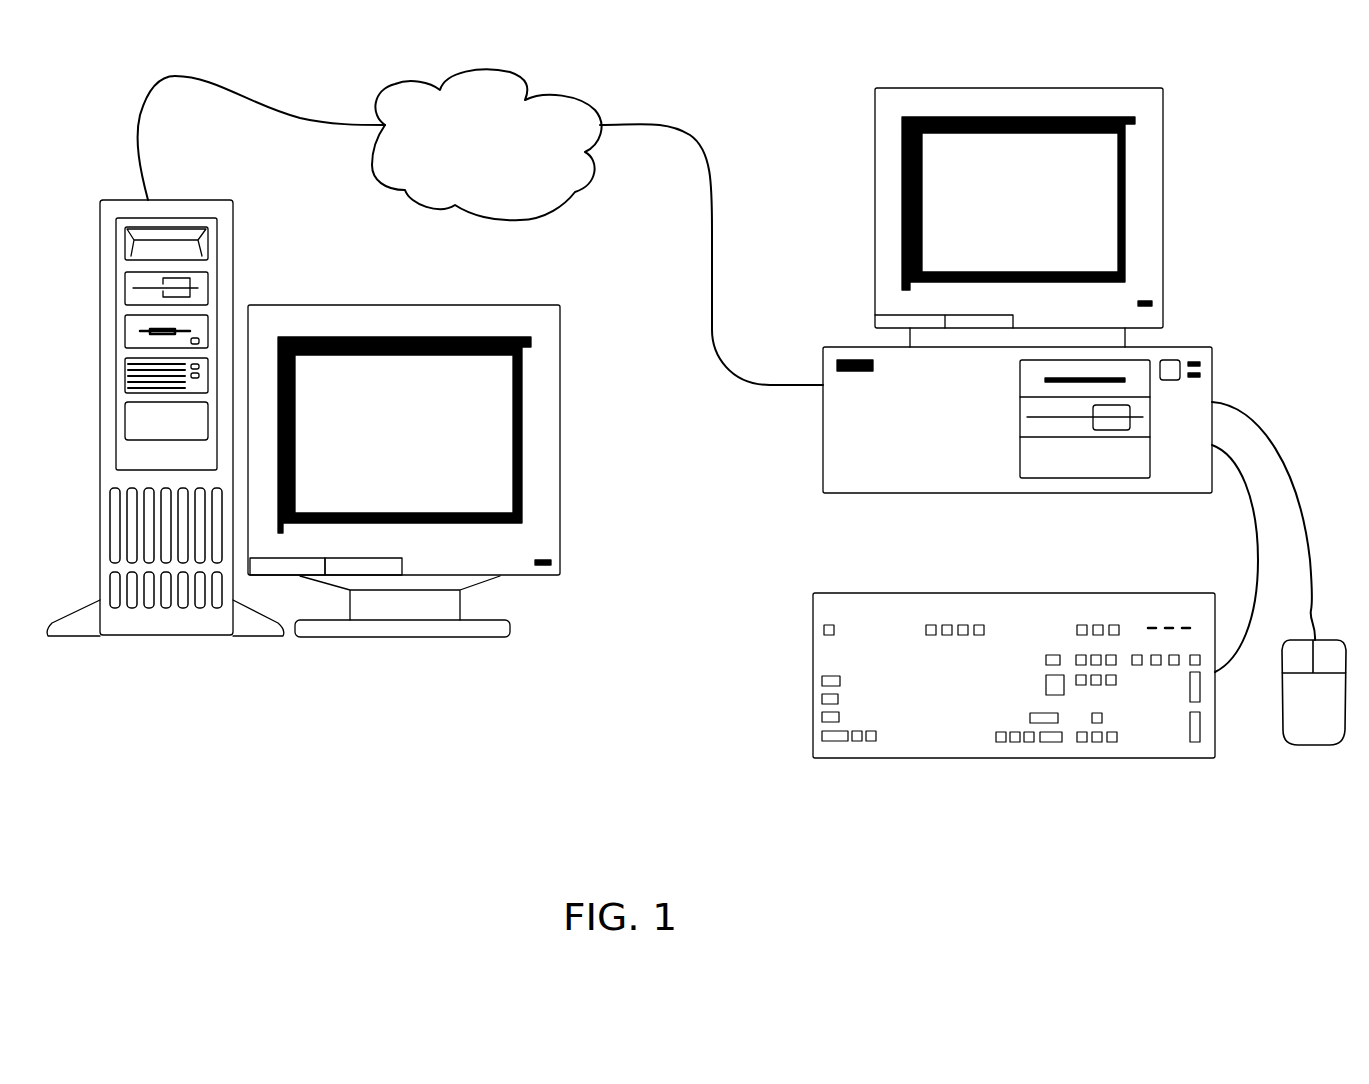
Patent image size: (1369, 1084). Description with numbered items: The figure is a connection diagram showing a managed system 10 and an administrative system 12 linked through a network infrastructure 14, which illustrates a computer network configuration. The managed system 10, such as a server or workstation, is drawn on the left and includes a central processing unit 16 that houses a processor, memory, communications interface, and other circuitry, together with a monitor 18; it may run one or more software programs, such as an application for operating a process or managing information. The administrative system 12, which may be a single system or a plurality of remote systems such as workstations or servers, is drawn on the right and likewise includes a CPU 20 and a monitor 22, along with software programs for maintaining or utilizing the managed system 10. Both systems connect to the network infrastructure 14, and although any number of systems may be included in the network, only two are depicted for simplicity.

The managed system 10 is at (404, 720).
The administrative system 12 is at (768, 677).
The network infrastructure 14 is at (443, 188).
The central processing unit 16 is at (234, 250).
The monitor 18 is at (560, 412).
The CPU 20 is at (823, 475).
The monitor 22 is at (875, 167).